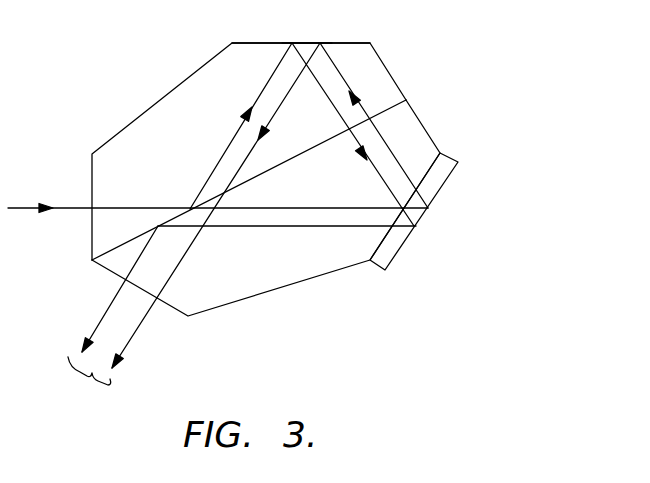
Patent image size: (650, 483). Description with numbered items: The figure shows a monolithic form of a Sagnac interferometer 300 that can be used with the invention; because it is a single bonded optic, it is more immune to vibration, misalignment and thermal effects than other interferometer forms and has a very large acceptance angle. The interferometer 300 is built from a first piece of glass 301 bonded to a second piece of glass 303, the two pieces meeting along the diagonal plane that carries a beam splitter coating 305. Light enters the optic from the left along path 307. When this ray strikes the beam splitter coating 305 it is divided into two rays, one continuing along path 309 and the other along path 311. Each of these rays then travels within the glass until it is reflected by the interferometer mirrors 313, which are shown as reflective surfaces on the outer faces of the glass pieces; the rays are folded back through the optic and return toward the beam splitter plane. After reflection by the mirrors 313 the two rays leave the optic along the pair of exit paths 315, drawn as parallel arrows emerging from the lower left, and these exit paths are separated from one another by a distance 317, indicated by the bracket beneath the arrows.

The interferometer 300 is at (509, 66).
The first piece of glass 301 is at (153, 122).
The second piece of glass 303 is at (238, 283).
The beam splitter coating 305 is at (115, 248).
The path 307 is at (70, 207).
The path 309 is at (324, 213).
The path 311 is at (285, 62).
The interferometer mirrors 313 is at (352, 43).
The paths 315 is at (100, 318).
The distance 317 is at (88, 385).